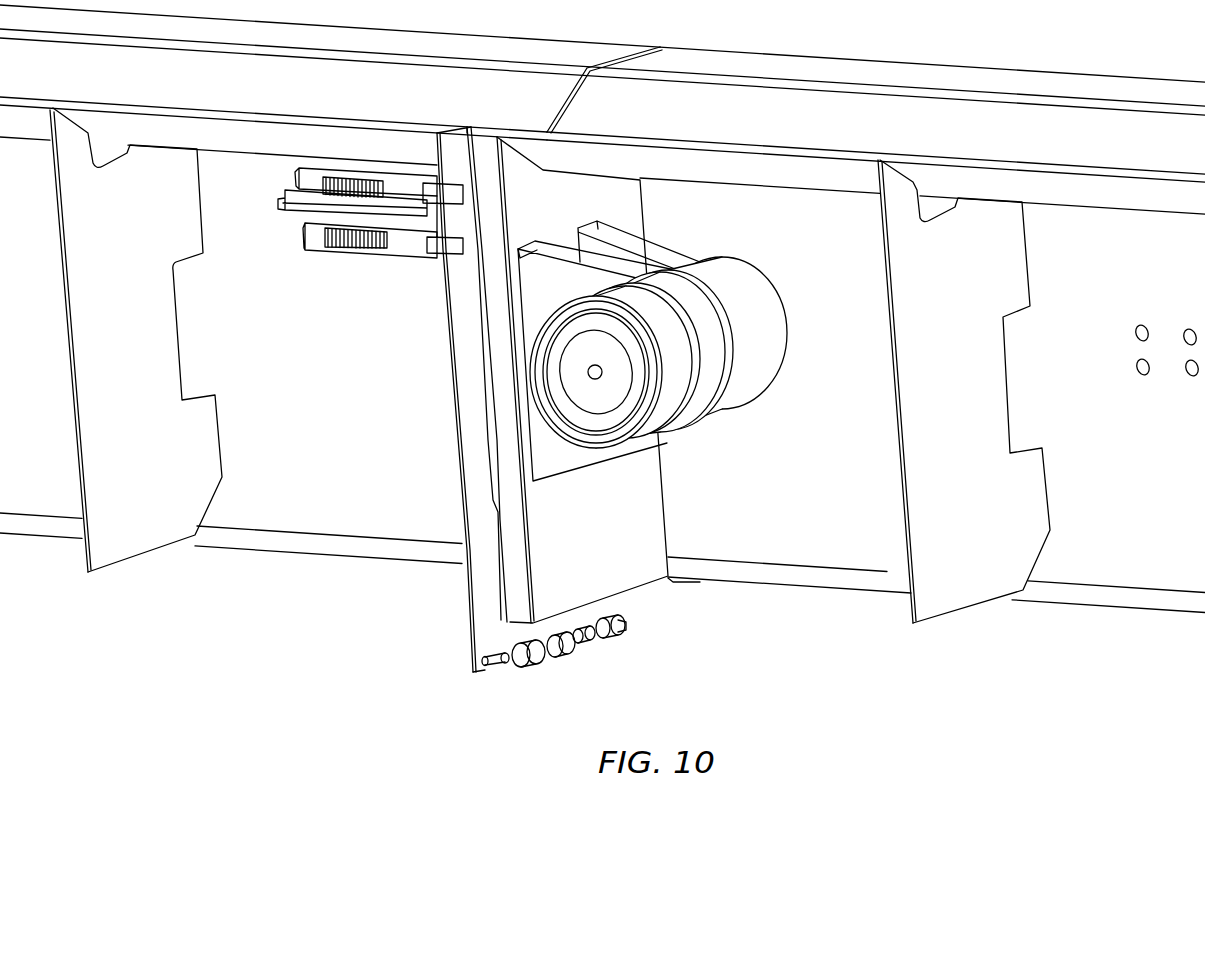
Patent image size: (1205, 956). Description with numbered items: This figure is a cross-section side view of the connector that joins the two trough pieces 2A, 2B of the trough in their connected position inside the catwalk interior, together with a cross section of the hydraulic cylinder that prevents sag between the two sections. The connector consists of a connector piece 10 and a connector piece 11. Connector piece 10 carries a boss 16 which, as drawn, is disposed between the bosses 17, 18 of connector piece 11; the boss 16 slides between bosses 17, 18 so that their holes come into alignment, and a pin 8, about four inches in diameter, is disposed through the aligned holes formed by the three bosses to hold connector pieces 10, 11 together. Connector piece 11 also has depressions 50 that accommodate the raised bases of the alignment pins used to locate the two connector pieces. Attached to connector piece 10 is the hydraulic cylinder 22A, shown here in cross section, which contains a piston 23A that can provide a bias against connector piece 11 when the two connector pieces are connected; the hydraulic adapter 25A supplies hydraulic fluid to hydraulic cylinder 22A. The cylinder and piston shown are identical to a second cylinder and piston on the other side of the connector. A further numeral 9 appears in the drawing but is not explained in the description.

The trough piece 2A is at (381, 104).
The trough piece 2B is at (725, 126).
The hydraulic adapter 25A is at (279, 203).
The hydraulic cylinder 22A is at (337, 253).
The piston 23A is at (458, 218).
The boss 17 is at (542, 288).
The boss 18 is at (658, 253).
The axle 9 is at (592, 364).
The boss 16 is at (700, 322).
The pin 8 is at (613, 397).
The connector piece 10 is at (477, 467).
The connector piece 11 is at (603, 544).
The depressions 50 is at (515, 600).